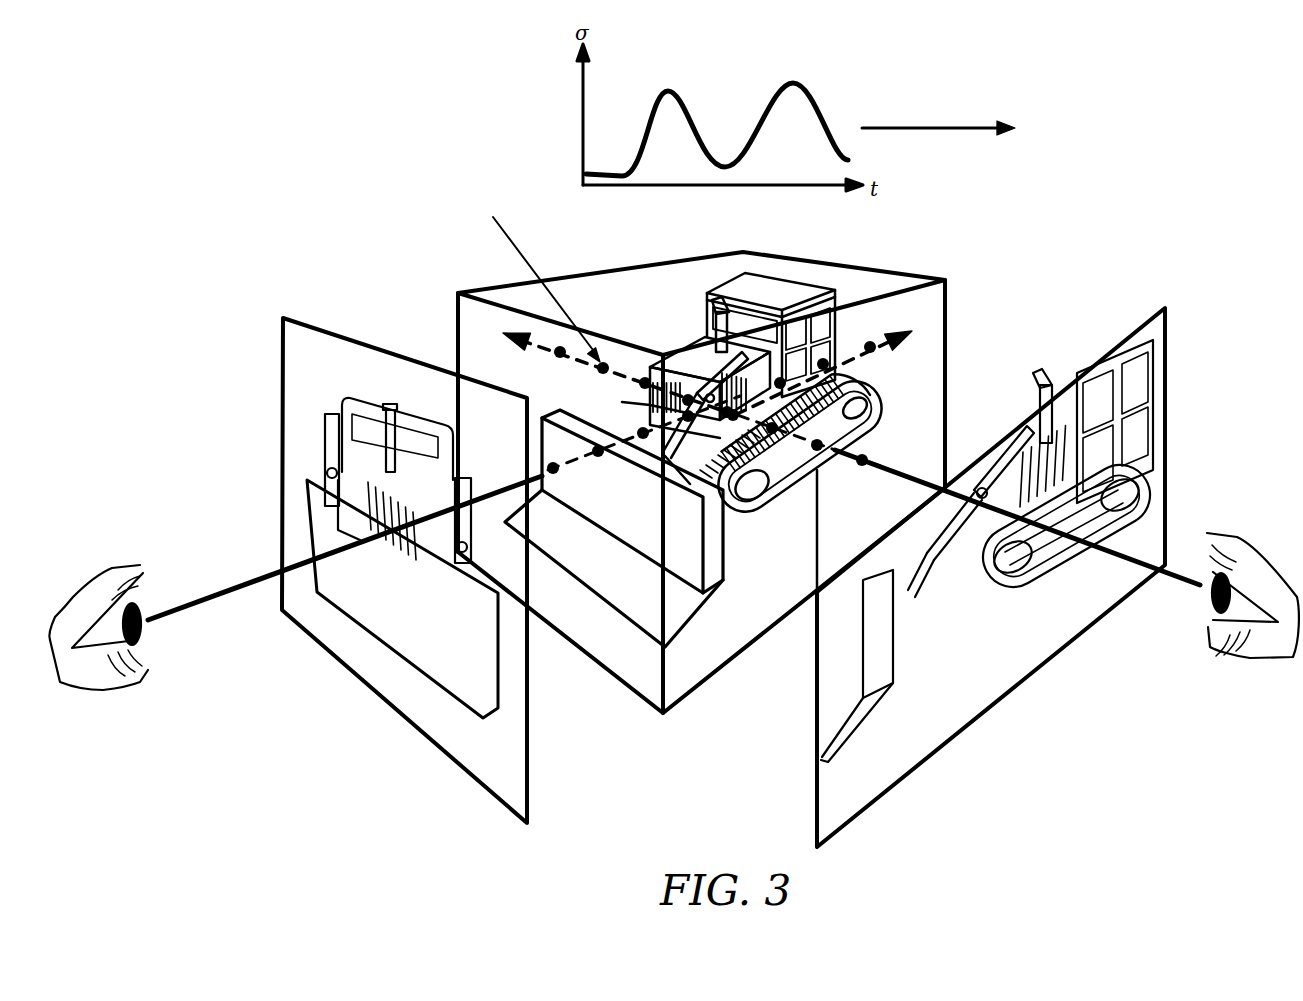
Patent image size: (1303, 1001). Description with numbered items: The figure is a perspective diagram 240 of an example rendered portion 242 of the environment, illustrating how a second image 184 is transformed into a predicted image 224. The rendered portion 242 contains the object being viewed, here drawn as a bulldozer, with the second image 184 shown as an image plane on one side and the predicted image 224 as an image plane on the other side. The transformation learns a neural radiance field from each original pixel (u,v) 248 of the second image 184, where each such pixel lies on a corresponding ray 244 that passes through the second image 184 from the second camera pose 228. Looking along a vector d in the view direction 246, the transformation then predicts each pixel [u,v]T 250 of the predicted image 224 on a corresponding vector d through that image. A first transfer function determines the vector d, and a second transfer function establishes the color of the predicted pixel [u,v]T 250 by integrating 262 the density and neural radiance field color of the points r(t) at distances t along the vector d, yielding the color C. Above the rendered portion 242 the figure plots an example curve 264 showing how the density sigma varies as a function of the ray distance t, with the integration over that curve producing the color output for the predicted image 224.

The second image 184 is at (382, 536).
The predicted image 224 is at (991, 537).
The second camera pose 228 is at (394, 543).
The ray 244 is at (253, 575).
The view direction 246 is at (1143, 558).
The perspective diagram 240 is at (464, 125).
The rendered portion 242 is at (630, 693).
The original pixel (u,v) 248 is at (409, 273).
The predicted pixel [u,v]T 250 is at (1047, 251).
The integrating 262 is at (930, 128).
The curve 264 is at (688, 116).